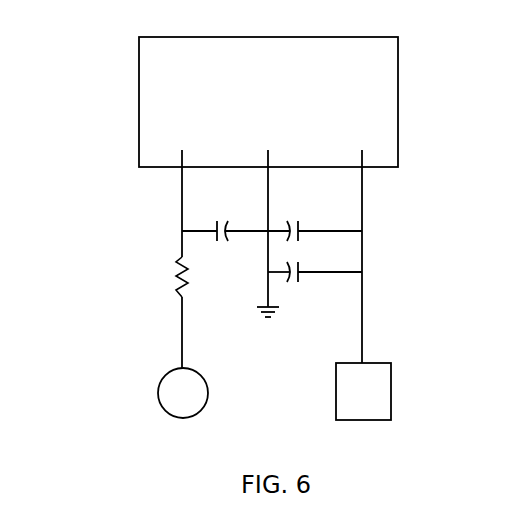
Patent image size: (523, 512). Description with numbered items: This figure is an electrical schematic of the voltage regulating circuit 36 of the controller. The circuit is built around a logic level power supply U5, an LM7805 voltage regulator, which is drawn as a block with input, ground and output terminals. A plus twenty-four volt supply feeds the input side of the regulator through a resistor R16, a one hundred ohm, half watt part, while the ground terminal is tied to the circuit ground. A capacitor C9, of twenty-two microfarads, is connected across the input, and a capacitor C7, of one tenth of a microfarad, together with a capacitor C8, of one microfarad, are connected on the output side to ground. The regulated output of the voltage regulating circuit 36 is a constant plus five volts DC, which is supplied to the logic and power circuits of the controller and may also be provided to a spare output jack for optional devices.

The voltage regulating circuit 36 is at (108, 112).
The logic level power supply U5 is at (282, 89).
The resistor R16 is at (157, 277).
The capacitor C7 is at (308, 243).
The capacitor C8 is at (308, 283).
The capacitor C9 is at (219, 248).